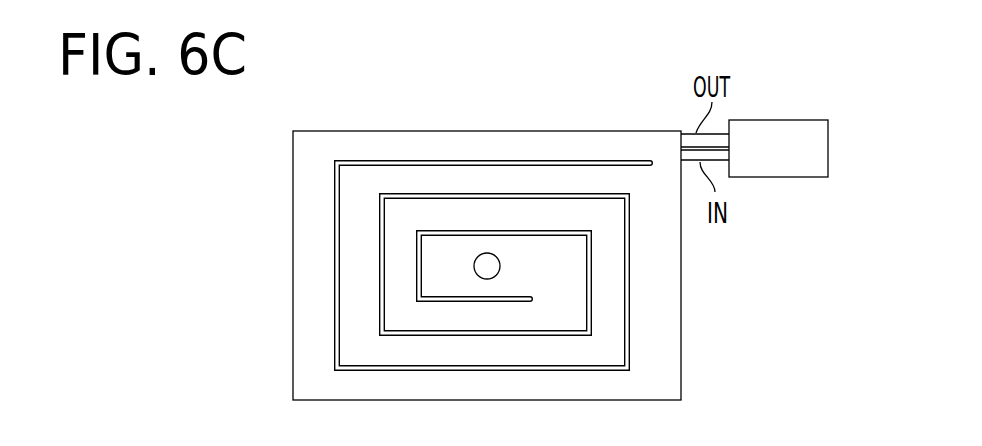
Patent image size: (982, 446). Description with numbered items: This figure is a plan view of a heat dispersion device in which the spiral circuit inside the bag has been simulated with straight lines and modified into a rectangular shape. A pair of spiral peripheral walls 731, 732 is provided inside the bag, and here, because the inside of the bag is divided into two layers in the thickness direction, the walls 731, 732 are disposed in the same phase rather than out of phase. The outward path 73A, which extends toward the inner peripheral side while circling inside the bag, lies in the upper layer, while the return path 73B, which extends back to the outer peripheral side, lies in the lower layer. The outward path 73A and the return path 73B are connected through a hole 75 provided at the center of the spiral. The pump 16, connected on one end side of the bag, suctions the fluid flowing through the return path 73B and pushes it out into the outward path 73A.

The pump 16 is at (800, 119).
The outward path 73A is at (448, 265).
The return path 73B is at (300, 305).
The hole 75 is at (497, 272).
The spiral peripheral wall 731 is at (493, 217).
The spiral peripheral wall 732 is at (385, 162).